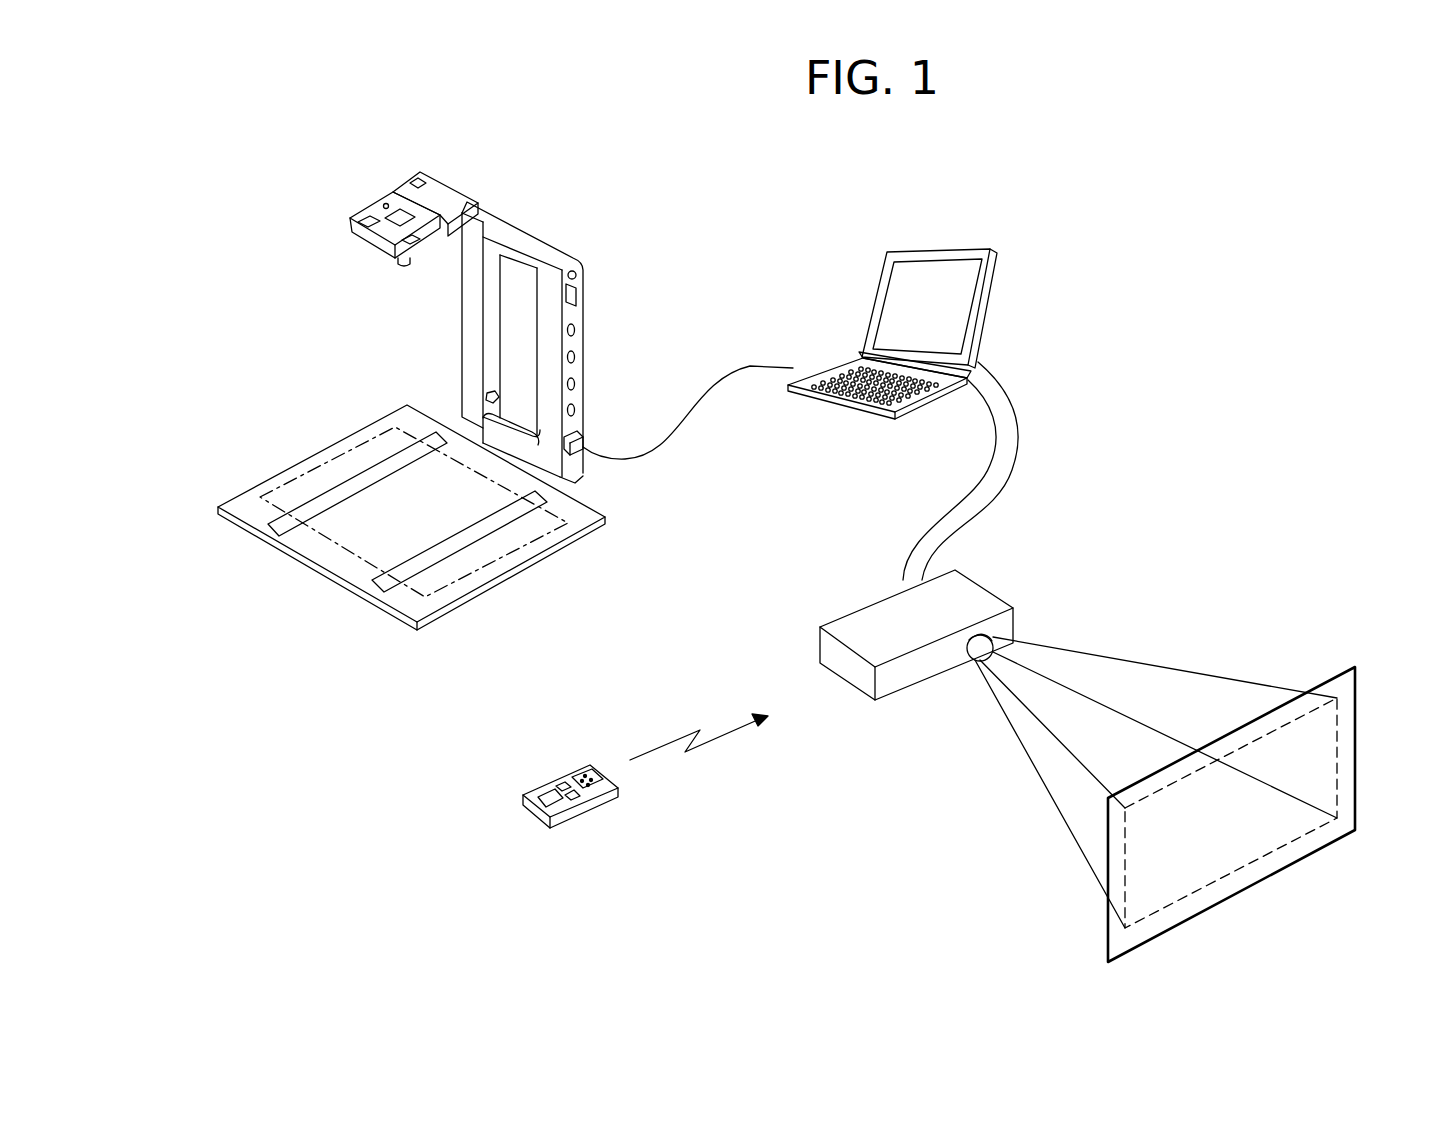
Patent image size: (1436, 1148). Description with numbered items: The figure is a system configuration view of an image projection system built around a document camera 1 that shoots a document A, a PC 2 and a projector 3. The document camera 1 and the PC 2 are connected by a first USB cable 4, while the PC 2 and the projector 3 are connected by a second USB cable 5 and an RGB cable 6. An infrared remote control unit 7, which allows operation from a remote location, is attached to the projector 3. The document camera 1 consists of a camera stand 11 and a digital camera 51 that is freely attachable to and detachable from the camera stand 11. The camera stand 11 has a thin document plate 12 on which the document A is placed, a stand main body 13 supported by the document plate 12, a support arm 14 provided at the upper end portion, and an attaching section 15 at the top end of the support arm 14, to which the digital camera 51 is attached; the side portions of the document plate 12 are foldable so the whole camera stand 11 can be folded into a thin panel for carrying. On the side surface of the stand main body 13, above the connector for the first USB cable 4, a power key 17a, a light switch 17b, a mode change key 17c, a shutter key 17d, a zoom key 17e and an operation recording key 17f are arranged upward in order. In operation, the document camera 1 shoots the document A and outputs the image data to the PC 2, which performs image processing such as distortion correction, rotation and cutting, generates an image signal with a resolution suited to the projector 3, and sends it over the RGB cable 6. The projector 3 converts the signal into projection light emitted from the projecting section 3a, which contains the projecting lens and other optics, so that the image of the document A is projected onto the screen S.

The document camera 1 is at (439, 383).
The PC (Personal Computer) 2 is at (948, 220).
The projector 3 is at (1078, 716).
The projecting section 3a is at (972, 657).
The first USB cable 4 is at (642, 460).
The second USB cable 5 is at (990, 428).
The RGB cable 6 is at (988, 471).
The infrared remote control unit 7 is at (556, 780).
The camera stand 11 is at (497, 306).
The document plate 12 is at (411, 508).
The stand main body 13 is at (462, 302).
The support arm 14 is at (500, 216).
The attaching section 15 is at (430, 182).
The power key 17a is at (578, 411).
The light switch 17b is at (578, 385).
The mode change key 17c is at (578, 357).
The shutter key 17d is at (578, 328).
The zoom key 17e is at (578, 292).
The operation recording key 17f is at (578, 270).
The digital camera 51 is at (373, 210).
The document A is at (313, 443).
The screen S is at (1330, 677).